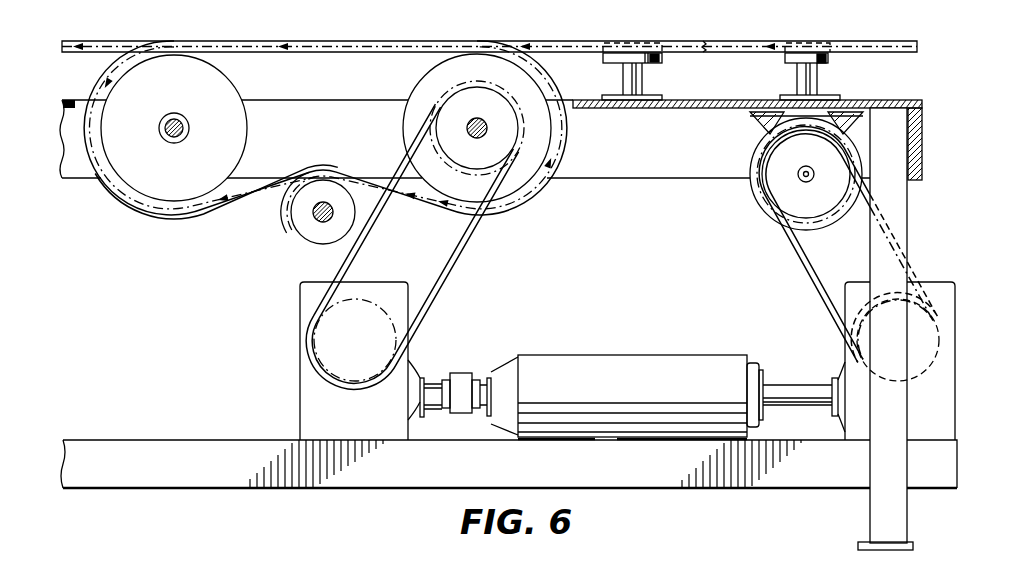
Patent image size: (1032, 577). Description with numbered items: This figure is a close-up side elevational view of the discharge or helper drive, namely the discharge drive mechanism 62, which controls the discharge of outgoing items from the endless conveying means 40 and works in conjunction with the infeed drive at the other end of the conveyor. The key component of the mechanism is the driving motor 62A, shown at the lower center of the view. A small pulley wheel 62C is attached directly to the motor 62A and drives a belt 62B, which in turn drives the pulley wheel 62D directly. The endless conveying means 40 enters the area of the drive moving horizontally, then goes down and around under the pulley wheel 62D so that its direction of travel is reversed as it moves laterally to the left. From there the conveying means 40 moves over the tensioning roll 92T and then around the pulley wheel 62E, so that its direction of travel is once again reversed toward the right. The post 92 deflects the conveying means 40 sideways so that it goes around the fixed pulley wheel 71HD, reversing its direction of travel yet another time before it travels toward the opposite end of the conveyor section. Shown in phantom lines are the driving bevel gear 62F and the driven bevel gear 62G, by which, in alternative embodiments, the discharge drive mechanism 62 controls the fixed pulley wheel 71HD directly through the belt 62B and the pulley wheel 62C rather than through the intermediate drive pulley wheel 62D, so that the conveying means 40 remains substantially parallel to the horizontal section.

The endless conveying means 40 is at (121, 41).
The discharge drive mechanism 62 is at (358, 25).
The driving motor 62A is at (512, 365).
The belt 62B is at (465, 236).
The small pulley wheel 62C is at (330, 334).
The pulley wheel 62D is at (557, 144).
The pulley wheel 62E is at (158, 187).
The driving bevel gear 62F is at (774, 206).
The driven bevel gear 62G is at (752, 124).
The post 92 is at (656, 64).
The tensioning roll 92T is at (295, 228).
The fixed pulley wheel 71HD is at (838, 56).